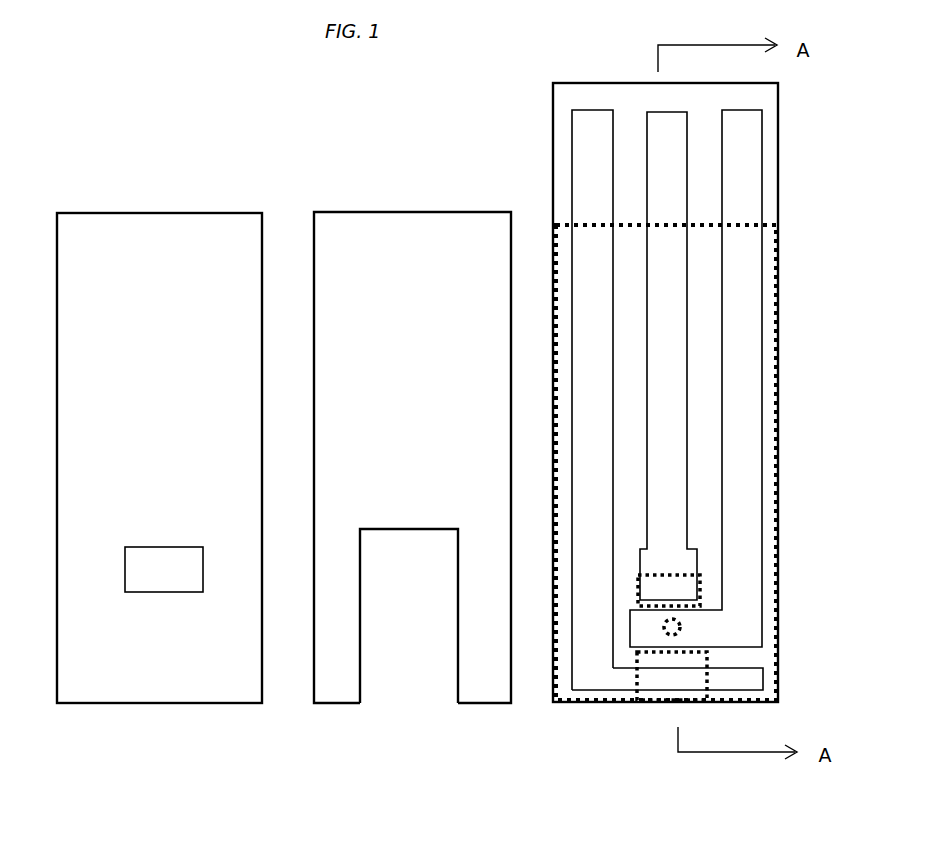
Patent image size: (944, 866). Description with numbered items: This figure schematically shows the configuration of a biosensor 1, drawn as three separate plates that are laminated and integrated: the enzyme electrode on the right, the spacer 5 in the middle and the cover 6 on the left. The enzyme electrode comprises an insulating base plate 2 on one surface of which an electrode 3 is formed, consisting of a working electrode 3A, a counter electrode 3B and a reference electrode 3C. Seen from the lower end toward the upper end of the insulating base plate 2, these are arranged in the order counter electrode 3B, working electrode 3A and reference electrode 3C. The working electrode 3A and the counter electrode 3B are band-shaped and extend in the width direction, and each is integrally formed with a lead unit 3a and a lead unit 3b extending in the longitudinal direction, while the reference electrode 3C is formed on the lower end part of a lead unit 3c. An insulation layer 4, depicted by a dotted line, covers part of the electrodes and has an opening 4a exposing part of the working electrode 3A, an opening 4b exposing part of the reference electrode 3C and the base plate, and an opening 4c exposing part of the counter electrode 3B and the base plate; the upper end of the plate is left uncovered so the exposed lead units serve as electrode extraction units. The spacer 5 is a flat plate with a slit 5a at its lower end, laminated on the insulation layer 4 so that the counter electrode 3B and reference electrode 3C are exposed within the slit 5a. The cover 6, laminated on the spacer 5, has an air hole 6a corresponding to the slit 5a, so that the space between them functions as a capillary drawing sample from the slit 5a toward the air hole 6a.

The biosensor 1 is at (393, 140).
The insulating base plate 2 is at (773, 192).
The electrode 3 is at (681, 390).
The working electrode 3A is at (557, 419).
The counter electrode 3B is at (672, 680).
The reference electrode 3C is at (720, 313).
The lead unit 3a is at (757, 130).
The lead unit 3b is at (575, 152).
The lead unit 3c is at (655, 127).
The insulation layer 4 is at (773, 398).
The opening 4a is at (683, 628).
The opening 4b is at (672, 574).
The opening 4c is at (680, 695).
The spacer 5 is at (392, 210).
The slit 5a is at (400, 672).
The cover 6 is at (185, 212).
The air hole 6a is at (152, 585).